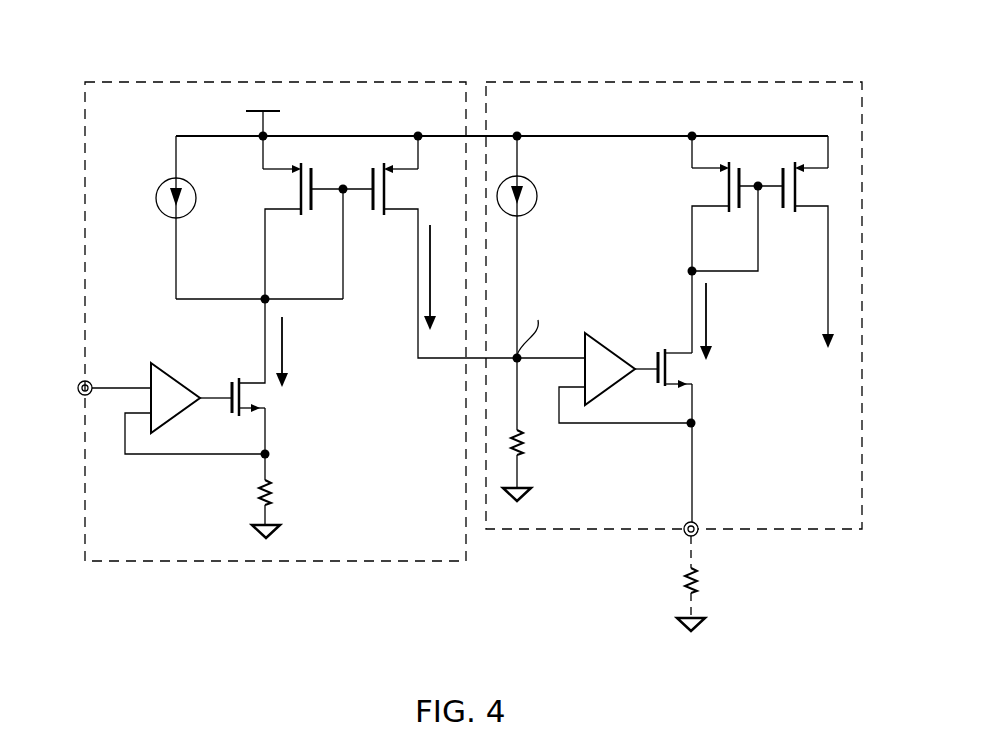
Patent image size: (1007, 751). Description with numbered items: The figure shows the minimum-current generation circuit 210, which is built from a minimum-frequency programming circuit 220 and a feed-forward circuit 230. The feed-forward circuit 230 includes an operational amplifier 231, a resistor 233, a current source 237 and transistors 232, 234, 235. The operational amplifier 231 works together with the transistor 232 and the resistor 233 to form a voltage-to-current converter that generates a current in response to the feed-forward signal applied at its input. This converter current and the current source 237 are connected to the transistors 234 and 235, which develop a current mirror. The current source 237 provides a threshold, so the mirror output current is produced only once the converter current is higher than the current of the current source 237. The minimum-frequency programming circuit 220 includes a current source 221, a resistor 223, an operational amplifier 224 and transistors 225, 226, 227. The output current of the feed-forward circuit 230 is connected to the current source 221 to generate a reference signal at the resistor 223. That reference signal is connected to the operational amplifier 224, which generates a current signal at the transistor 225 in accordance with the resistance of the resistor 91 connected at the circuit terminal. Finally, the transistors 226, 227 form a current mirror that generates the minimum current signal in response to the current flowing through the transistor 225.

The minimum-current generation circuit 210 is at (823, 57).
The minimum-frequency programming circuit 220 is at (815, 531).
The feed-forward circuit 230 is at (150, 563).
The current source 221 is at (537, 207).
The resistor 223 is at (530, 440).
The operational amplifier 224 is at (600, 341).
The transistor 225 is at (668, 350).
The transistor 226 is at (711, 207).
The transistor 227 is at (808, 207).
The operational amplifier 231 is at (170, 376).
The transistor 232 is at (250, 382).
The resistor 233 is at (257, 494).
The transistor 234 is at (312, 201).
The transistor 235 is at (390, 214).
The current source 237 is at (160, 186).
The resistor 91 is at (702, 582).